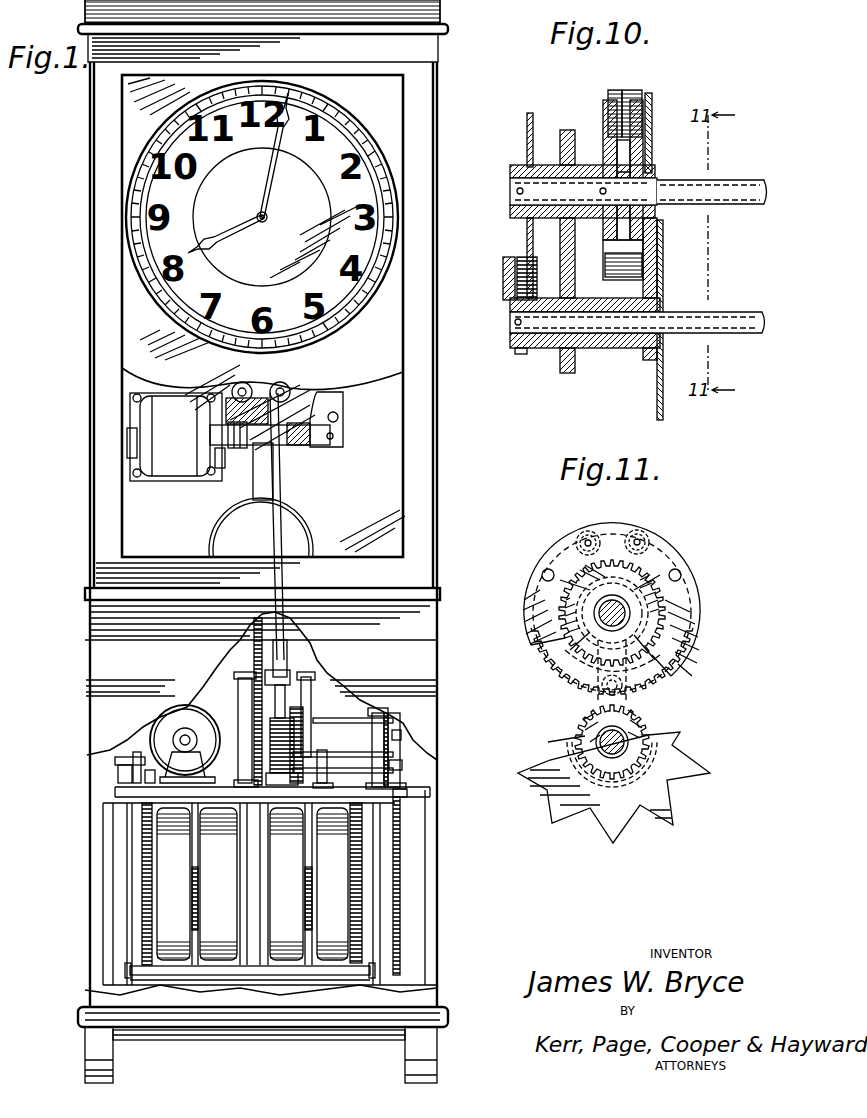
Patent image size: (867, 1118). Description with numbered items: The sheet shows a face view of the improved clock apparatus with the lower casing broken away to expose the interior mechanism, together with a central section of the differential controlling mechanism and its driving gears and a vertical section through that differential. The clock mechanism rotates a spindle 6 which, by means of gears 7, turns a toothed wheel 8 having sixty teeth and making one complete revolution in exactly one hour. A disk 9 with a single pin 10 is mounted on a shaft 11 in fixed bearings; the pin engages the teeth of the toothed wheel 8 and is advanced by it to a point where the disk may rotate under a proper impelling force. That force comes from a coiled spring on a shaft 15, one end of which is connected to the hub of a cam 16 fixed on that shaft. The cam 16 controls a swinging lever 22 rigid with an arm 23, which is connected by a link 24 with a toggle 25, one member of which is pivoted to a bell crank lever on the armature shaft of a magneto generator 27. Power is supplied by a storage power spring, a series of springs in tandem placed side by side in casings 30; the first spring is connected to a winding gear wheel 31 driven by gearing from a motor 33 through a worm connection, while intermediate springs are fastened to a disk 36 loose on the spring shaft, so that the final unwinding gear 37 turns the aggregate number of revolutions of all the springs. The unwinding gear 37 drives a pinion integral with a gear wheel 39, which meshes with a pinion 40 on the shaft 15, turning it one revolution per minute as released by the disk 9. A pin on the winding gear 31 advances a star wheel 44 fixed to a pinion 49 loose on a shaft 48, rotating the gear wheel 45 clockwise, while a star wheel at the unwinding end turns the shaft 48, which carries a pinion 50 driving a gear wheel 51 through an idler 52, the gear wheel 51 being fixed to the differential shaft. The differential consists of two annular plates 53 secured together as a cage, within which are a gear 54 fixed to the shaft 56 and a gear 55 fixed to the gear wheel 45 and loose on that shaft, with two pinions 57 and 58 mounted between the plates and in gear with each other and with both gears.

In FIG. 1, the spindle 6 is at (280, 474).
In FIG. 1, the gears 7 is at (288, 668).
In FIG. 1, the toothed wheel 8 is at (254, 656).
In FIG. 1, the disk 9 is at (275, 786).
In FIG. 1, the pin 10 is at (262, 762).
In FIG. 1, the shaft 11 is at (343, 764).
In FIG. 1, the shaft 15 is at (343, 719).
In FIG. 1, the cam 16 is at (312, 688).
In FIG. 1, the swinging lever 22 is at (315, 698).
In FIG. 1, the arm 23 is at (401, 742).
In FIG. 1, the link 24 is at (402, 764).
In FIG. 1, the toggle 25 is at (407, 794).
In FIG. 1, the magneto generator 27 is at (372, 692).
In FIG. 1, the casings 30 is at (252, 884).
In FIG. 1, the gear wheel 31 is at (150, 870).
In FIG. 1, the motor 33 is at (206, 718).
In FIG. 1, the disk 36 is at (242, 985).
In FIG. 1, the unwinding gear 37 is at (364, 873).
In FIG. 1, the gear wheel 39 is at (400, 832).
In FIG. 1, the pinion 40 is at (396, 728).
In FIG. 10, the star wheel 44 is at (665, 268).
In FIG. 11, the star wheel 44 is at (692, 768).
In FIG. 10, the gear wheel 45 is at (655, 116).
In FIG. 11, the gear wheel 45 is at (672, 680).
In FIG. 10, the shaft 48 is at (742, 313).
In FIG. 11, the shaft 48 is at (610, 756).
In FIG. 10, the pinion 49 is at (645, 352).
In FIG. 11, the pinion 49 is at (648, 730).
In FIG. 10, the pinion 50 is at (522, 350).
In FIG. 10, the gear wheel 51 is at (527, 138).
In FIG. 10, the idler 52 is at (510, 288).
In FIG. 10, the annular plates 53 is at (605, 100).
In FIG. 11, the annular plates 53 is at (690, 623).
In FIG. 10, the gear 54 is at (602, 150).
In FIG. 10, the gear 55 is at (645, 162).
In FIG. 11, the gear 55 is at (645, 585).
In FIG. 10, the shaft 56 is at (735, 188).
In FIG. 11, the shaft 56 is at (632, 607).
In FIG. 10, the pinion 57 is at (616, 90).
In FIG. 11, the pinion 57 is at (578, 530).
In FIG. 10, the pinion 58 is at (632, 92).
In FIG. 11, the pinion 58 is at (652, 528).